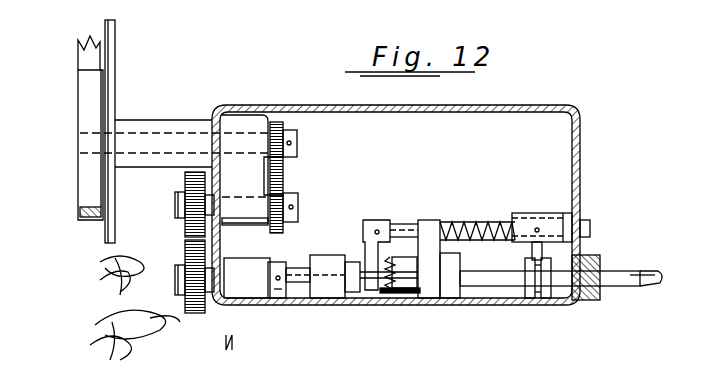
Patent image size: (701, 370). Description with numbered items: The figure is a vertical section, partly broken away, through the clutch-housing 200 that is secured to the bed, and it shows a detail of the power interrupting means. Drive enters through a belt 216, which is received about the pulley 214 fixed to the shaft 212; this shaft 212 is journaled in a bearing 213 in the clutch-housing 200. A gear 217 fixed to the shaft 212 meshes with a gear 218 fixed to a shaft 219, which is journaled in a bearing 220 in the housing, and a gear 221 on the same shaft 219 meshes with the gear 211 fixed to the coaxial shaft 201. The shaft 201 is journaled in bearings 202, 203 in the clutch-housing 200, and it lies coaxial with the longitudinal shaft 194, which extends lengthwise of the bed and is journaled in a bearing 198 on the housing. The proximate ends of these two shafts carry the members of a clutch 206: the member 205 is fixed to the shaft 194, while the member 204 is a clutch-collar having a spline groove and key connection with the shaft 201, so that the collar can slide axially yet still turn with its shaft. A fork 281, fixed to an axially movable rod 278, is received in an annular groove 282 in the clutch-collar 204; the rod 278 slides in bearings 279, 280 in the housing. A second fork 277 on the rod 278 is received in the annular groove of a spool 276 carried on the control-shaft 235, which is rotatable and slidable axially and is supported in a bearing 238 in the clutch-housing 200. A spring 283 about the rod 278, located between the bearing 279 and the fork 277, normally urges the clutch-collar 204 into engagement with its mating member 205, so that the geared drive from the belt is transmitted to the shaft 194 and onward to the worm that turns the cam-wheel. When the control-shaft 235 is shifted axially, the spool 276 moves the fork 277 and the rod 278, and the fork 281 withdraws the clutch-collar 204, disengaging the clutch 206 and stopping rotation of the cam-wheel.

The clutch-housing 200 is at (446, 104).
The belt 216 is at (108, 62).
The pulley 214 is at (104, 105).
The bearing 213 is at (256, 119).
The shaft 212 is at (298, 141).
The gear 217 is at (285, 160).
The gear 218 is at (284, 181).
The shaft 219 is at (299, 207).
The bearing 220 is at (250, 225).
The gear 221 is at (185, 233).
The gear 211 is at (185, 255).
The bearing 202 is at (250, 285).
The coaxial shaft 201 is at (295, 268).
The bearing 203 is at (322, 285).
The clutch-collar 204 is at (352, 262).
The fork 281 is at (381, 220).
The annular groove 282 is at (370, 292).
The clutch 206 is at (394, 295).
The clutch member 205 is at (404, 292).
The bearing 279 is at (431, 220).
The bearing 198 is at (441, 280).
The spring 283 is at (470, 222).
The bearing 280 is at (556, 213).
The rod 278 is at (590, 230).
The fork 277 is at (532, 255).
The spool 276 is at (537, 298).
The longitudinal shaft 194 is at (477, 292).
The control-shaft 235 is at (604, 290).
The bearing 238 is at (582, 305).